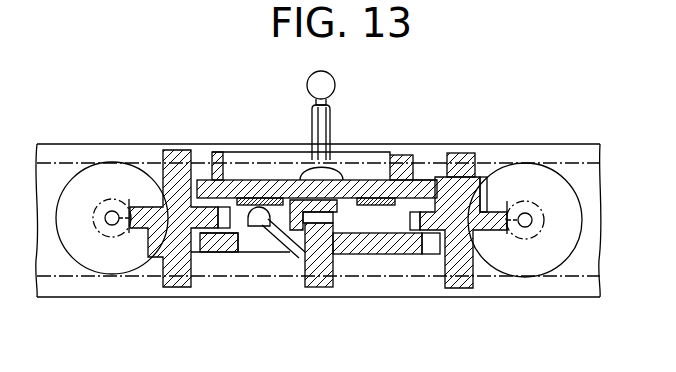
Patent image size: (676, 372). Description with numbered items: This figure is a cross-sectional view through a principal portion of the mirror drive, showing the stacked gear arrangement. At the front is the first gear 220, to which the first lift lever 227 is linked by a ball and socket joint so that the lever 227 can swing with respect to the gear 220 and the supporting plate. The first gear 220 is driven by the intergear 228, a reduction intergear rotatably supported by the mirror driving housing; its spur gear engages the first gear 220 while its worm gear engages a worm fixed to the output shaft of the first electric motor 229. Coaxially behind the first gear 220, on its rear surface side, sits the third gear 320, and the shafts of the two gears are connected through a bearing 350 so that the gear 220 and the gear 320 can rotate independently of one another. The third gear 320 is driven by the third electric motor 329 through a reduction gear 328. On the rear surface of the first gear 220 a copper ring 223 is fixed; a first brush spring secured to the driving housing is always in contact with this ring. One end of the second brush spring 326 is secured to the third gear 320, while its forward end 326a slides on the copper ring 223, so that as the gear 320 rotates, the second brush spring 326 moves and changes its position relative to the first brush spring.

The third electric motor 329 is at (110, 177).
The reduction gear 328 is at (187, 156).
The first lift lever 227 is at (329, 115).
The copper ring 223 is at (363, 180).
The first gear 220 is at (396, 190).
The intergear 228 is at (461, 160).
The first electric motor 229 is at (535, 178).
The forward end of second brush spring 326a is at (255, 223).
The second brush spring 326 is at (290, 240).
The bearing 350 is at (342, 266).
The third gear 320 is at (413, 245).